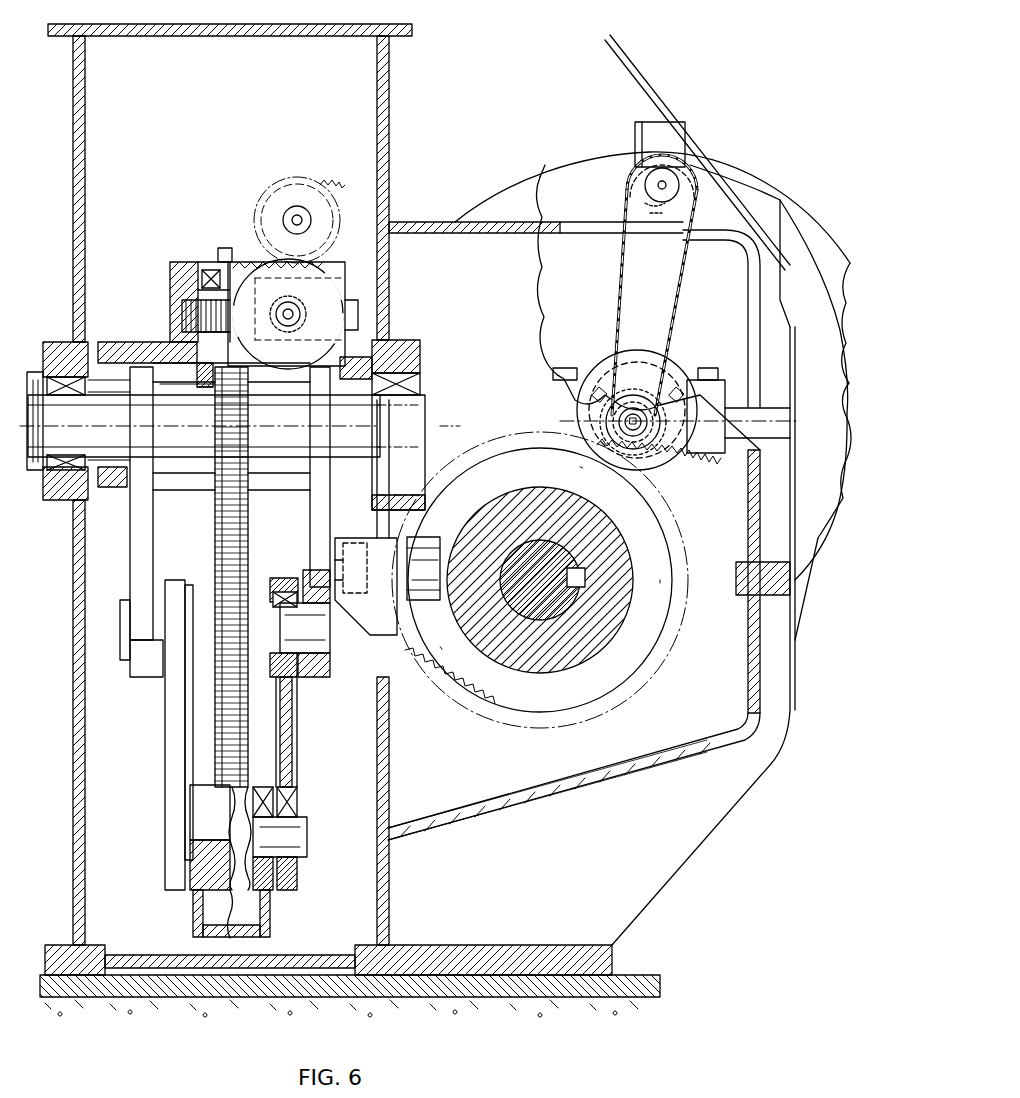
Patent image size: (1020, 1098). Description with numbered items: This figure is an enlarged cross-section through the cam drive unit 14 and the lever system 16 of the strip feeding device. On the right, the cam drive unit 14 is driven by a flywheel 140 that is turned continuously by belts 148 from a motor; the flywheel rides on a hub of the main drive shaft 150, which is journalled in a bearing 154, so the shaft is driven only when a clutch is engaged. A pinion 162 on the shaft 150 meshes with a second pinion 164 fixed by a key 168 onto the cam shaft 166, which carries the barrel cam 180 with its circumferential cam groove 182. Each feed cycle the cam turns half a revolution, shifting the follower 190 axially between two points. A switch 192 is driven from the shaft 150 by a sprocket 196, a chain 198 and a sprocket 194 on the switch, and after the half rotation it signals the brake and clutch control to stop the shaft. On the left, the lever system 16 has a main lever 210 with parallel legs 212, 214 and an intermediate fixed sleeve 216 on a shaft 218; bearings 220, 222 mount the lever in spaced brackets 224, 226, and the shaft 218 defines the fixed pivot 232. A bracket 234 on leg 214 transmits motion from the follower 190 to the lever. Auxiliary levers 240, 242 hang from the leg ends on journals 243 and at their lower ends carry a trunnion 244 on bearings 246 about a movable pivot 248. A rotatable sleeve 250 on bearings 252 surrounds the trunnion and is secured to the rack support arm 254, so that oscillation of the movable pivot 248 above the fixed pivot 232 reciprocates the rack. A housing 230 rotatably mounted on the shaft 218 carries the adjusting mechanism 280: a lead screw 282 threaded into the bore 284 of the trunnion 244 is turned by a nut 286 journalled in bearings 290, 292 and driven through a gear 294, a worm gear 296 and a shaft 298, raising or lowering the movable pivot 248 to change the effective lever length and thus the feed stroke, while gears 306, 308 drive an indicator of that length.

The cam drive unit 14 is at (459, 241).
The lever system 16 is at (118, 259).
The flywheel 140 is at (570, 168).
The belts 148 is at (660, 68).
The main drive shaft 150 is at (635, 400).
The bearing 154 is at (704, 376).
The pinion 162 is at (665, 485).
The second pinion 164 is at (630, 655).
The cam shaft 166 is at (553, 605).
The key 168 is at (585, 575).
The barrel cam 180 is at (500, 455).
The cam groove 182 is at (655, 605).
The follower 190 is at (440, 538).
The switch 192 is at (675, 125).
The sprocket 194 is at (690, 163).
The sprocket 196 is at (678, 440).
The chain 198 is at (695, 272).
The main lever 210 is at (156, 556).
The leg 212 is at (155, 582).
The leg 214 is at (310, 520).
The fixed sleeve 216 is at (276, 490).
The shaft 218 is at (112, 480).
The bearing 220 is at (93, 352).
The bearing 222 is at (400, 378).
The bracket 224 is at (55, 340).
The bracket 226 is at (406, 342).
The housing 230 is at (135, 342).
The fixed pivot 232 is at (420, 425).
The bracket 234 is at (375, 625).
The auxiliary lever 240 is at (163, 752).
The auxiliary lever 242 is at (298, 727).
The journals 243 is at (140, 672).
The trunnion 244 is at (278, 842).
The bearings 246 is at (300, 836).
The movable pivot 248 is at (385, 848).
The rotatable sleeve 250 is at (265, 792).
The bearings 252 is at (278, 804).
The rack support arm 254 is at (270, 920).
The adjusting mechanism 280 is at (210, 204).
The lead screw 282 is at (248, 592).
The bore 284 is at (262, 852).
The nut 286 is at (185, 300).
The bearing 290 is at (198, 262).
The bearing 292 is at (200, 345).
The gear 294 is at (185, 306).
The worm gear 296 is at (292, 312).
The shaft 298 is at (288, 320).
The gear 306 is at (330, 190).
The gear 308 is at (263, 272).